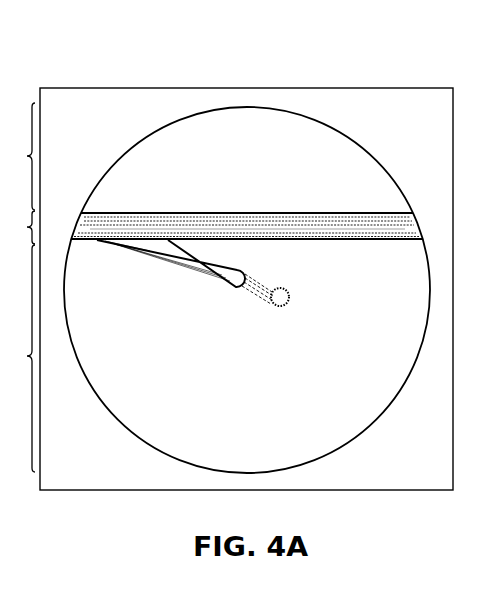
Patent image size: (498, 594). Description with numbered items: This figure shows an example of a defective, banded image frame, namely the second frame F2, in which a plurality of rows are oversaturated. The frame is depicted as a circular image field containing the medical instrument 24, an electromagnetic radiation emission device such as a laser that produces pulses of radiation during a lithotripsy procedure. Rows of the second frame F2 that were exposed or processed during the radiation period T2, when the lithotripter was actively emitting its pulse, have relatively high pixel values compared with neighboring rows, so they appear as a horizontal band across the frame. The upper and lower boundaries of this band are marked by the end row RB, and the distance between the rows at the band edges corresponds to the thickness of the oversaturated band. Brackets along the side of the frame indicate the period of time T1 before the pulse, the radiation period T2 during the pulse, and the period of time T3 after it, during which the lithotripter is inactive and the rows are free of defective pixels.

The second frame F2 is at (162, 127).
The end row RB is at (353, 284).
The medical instrument 24 is at (205, 278).
The period of time T1 is at (19, 156).
The radiation period T2 is at (19, 227).
The period of time T3 is at (19, 358).